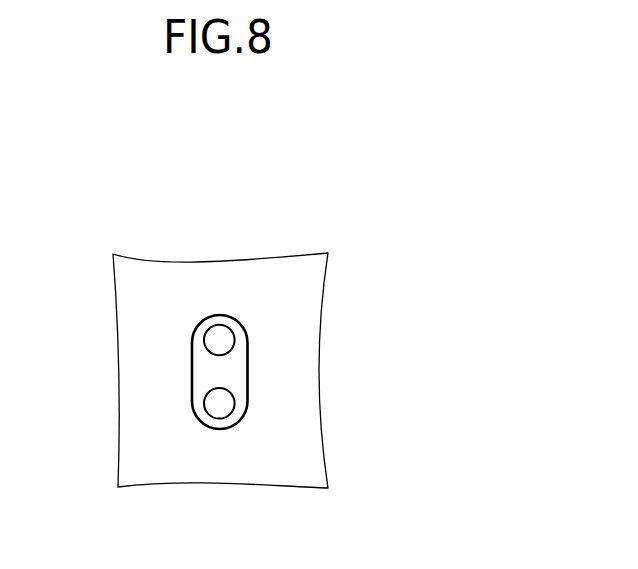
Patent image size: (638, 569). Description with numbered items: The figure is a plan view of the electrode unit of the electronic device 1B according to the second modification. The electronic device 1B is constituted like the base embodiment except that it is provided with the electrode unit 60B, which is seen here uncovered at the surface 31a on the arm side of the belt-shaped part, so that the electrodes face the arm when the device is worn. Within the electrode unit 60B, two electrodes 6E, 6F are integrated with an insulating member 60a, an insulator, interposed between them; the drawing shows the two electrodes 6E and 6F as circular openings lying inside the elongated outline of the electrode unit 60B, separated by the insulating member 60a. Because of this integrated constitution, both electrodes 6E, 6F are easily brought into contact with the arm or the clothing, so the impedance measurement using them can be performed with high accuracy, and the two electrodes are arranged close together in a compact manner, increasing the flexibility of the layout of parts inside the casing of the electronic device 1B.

The electronic device 1B is at (300, 171).
The surface 31a is at (296, 470).
The electrode unit 60B is at (258, 363).
The insulating member 60a is at (234, 382).
The electrode 6E is at (218, 342).
The electrode 6F is at (220, 404).